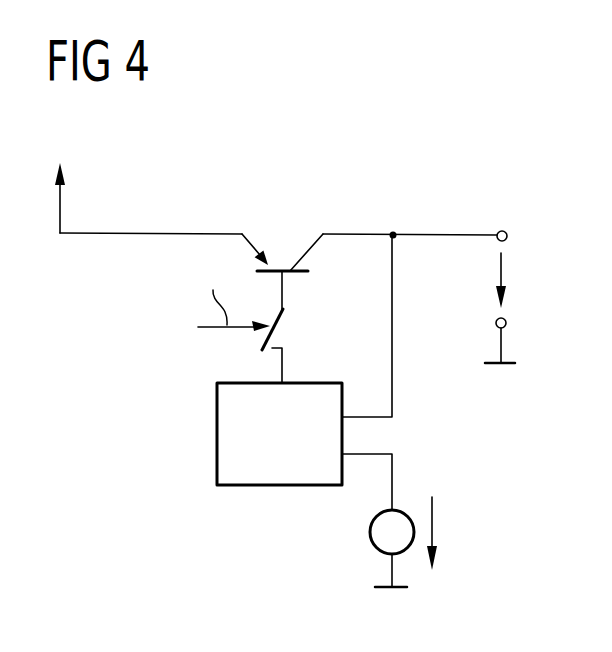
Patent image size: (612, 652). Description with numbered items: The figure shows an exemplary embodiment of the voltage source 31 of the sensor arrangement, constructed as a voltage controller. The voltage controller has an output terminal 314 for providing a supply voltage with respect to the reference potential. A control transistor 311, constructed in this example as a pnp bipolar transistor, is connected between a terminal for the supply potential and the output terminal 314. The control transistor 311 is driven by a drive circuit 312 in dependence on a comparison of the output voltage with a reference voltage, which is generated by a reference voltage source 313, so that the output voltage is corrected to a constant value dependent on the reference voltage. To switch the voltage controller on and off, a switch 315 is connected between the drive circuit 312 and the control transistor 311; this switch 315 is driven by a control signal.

The voltage source 31 is at (462, 146).
The control transistor 311 is at (287, 268).
The drive circuit 312 is at (217, 432).
The reference voltage source 313 is at (370, 530).
The output terminal 314 is at (502, 231).
The switch 315 is at (277, 324).